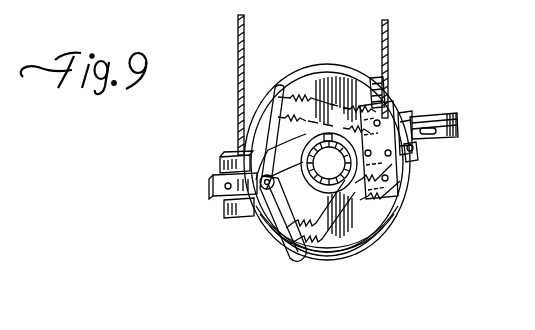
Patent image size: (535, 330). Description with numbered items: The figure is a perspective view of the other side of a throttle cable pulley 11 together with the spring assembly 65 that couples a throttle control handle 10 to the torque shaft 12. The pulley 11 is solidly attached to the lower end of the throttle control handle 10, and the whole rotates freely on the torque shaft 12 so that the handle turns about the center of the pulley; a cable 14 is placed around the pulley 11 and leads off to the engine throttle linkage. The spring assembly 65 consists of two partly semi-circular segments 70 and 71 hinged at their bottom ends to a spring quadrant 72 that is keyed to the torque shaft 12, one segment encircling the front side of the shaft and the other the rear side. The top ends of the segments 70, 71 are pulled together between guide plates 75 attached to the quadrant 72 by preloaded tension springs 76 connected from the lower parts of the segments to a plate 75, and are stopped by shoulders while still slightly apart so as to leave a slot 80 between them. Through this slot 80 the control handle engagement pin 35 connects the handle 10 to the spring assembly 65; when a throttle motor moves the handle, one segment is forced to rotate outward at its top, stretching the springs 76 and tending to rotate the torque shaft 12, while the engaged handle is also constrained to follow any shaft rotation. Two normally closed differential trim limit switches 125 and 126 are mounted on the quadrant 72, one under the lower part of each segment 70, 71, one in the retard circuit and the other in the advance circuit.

The cable 14 is at (244, 36).
The segment 71 is at (338, 68).
The preloaded tension springs 76 is at (278, 96).
The guide plates 75 is at (380, 92).
The slot 80 is at (413, 118).
The throttle control handle 10 is at (459, 128).
The control handle engagement pin 35 is at (416, 150).
The spring assembly 65 is at (382, 255).
The segment 70 is at (301, 259).
The torque shaft 12 is at (285, 233).
The spring quadrant 72 is at (268, 216).
The differential trim limit switch 126 is at (226, 210).
The differential trim limit switch 125 is at (217, 166).
The throttle cable pulley 11 is at (252, 130).